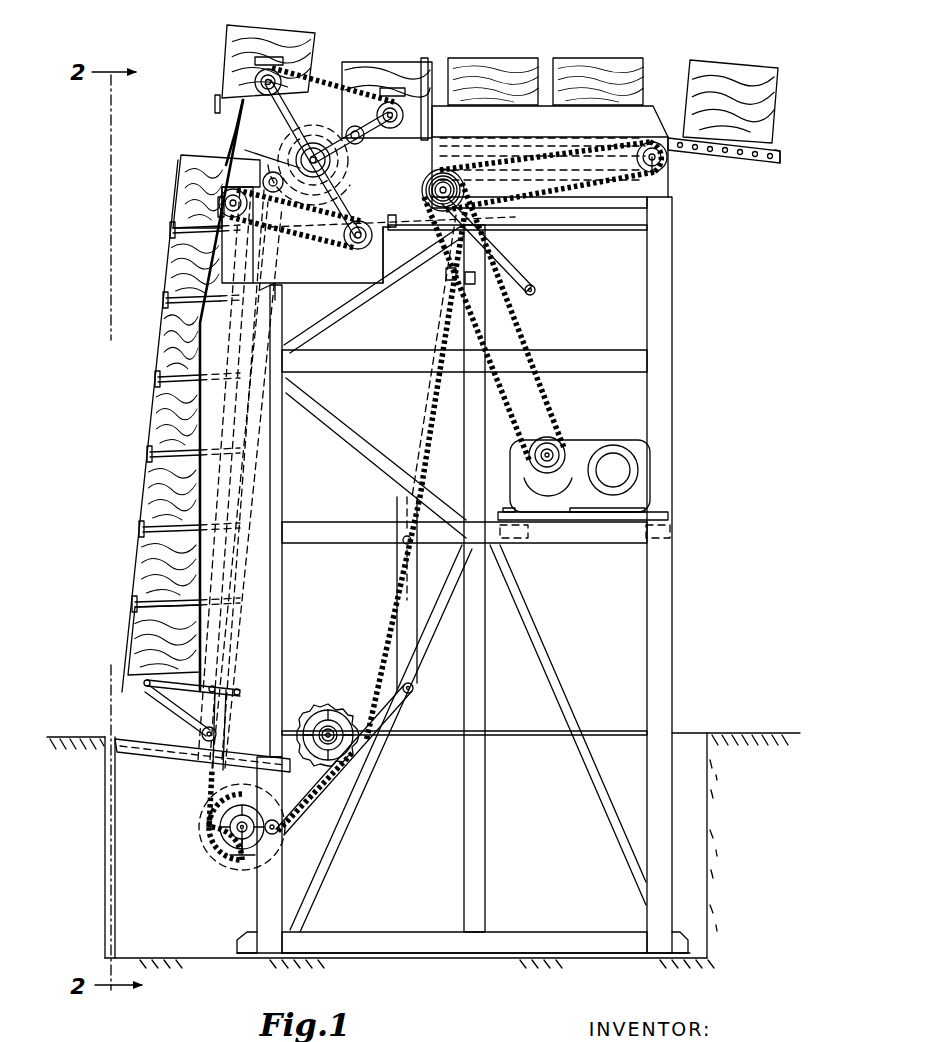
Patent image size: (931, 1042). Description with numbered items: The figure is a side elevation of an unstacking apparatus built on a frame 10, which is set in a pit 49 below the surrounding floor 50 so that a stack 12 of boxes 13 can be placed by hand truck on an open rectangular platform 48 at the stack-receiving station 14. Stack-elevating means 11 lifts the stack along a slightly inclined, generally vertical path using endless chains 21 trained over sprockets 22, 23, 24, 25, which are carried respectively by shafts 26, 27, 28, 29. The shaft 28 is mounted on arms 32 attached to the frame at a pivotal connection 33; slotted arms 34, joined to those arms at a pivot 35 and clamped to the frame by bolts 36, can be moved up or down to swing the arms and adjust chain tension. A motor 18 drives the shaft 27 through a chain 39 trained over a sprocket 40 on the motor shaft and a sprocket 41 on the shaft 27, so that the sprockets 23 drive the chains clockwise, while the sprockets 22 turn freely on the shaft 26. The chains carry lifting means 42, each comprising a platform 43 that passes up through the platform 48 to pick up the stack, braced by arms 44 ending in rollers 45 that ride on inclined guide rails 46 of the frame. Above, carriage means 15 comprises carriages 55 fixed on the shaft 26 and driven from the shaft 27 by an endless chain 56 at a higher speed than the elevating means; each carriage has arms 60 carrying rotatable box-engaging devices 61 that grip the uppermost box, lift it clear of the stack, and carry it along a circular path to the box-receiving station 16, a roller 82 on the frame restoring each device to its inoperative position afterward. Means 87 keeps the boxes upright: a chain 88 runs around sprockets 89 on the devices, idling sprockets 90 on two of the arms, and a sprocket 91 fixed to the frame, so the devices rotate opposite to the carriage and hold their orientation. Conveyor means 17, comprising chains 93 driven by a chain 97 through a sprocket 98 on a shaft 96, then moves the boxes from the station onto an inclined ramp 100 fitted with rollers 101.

The frame 10 is at (674, 345).
The stack-elevating means 11 is at (200, 813).
The stack 12 is at (160, 326).
The boxes 13 is at (190, 241).
The stack-receiving station 14 is at (104, 664).
The carriage means 15 is at (337, 58).
The box-receiving station 16 is at (500, 58).
The conveyor means 17 is at (632, 130).
The motor 18 is at (608, 440).
The endless chains 21 is at (212, 845).
The sprockets 22 is at (236, 130).
The sprockets 23 is at (456, 172).
The sprockets 24 is at (322, 705).
The sprockets 25 is at (222, 866).
The shaft 26 is at (313, 142).
The shaft 27 is at (433, 216).
The shaft 28 is at (332, 722).
The shaft 29 is at (240, 858).
The arms 32 is at (385, 728).
The pivotal connection 33 is at (282, 830).
The slotted arms 34 is at (400, 579).
The pivot 35 is at (412, 694).
The bolts 36 is at (400, 531).
The chain 39 is at (556, 406).
The sprocket 40 is at (564, 442).
The sprocket 41 is at (466, 180).
The lifting means 42 is at (522, 279).
The platform 43 is at (533, 296).
The arms 44 is at (490, 271).
The rollers 45 is at (515, 217).
The inclined guide rails 46 is at (212, 778).
The stack-receiving platform 48 is at (120, 752).
The pit 49 is at (112, 850).
The floor 50 is at (62, 735).
The carriages 55 is at (313, 58).
The endless chain 56 is at (399, 255).
The arms 60 is at (312, 250).
The box-engaging devices 61 is at (274, 68).
The roller 82 is at (432, 74).
The means for maintaining boxes upright 87 is at (240, 100).
The chain 88 is at (235, 113).
The sprockets 89 is at (228, 90).
The idling sprockets 90 is at (213, 172).
The sprocket 91 is at (243, 150).
The chains 93 is at (578, 132).
The shaft 96 is at (668, 160).
The chain 97 is at (590, 188).
The sprocket 98 is at (655, 176).
The inclined ramp 100 is at (752, 162).
The rollers 101 is at (780, 152).